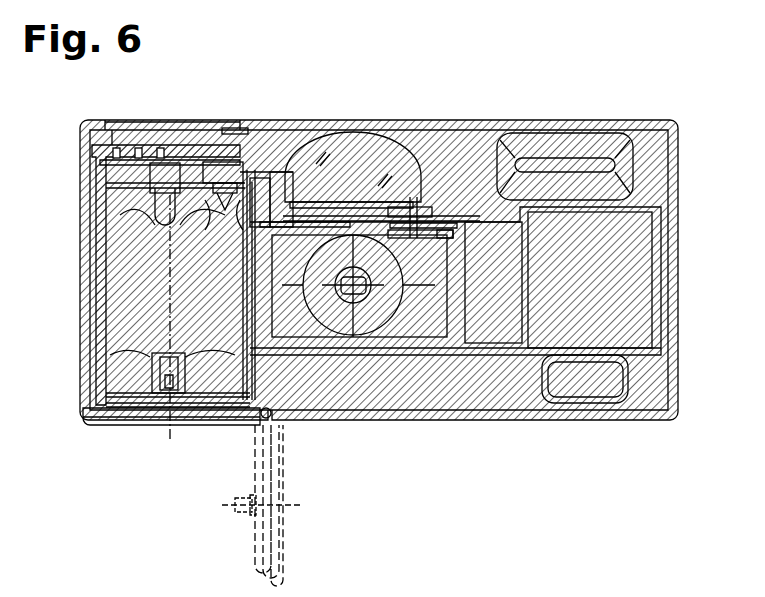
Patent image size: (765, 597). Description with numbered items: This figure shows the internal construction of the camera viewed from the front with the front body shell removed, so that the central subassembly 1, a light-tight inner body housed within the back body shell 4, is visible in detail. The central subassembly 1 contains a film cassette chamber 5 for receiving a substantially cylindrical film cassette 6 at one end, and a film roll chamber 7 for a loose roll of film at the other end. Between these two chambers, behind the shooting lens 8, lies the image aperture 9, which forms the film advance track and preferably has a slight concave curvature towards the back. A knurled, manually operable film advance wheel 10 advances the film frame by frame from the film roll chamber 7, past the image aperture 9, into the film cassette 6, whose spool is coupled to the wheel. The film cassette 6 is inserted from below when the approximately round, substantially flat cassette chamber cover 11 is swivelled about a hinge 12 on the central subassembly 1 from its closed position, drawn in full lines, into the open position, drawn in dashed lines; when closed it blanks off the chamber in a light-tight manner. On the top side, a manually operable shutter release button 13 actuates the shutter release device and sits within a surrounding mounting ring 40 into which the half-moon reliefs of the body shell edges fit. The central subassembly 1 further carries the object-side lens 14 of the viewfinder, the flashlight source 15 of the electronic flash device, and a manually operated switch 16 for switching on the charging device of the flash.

The central subassembly 1 is at (493, 330).
The back body shell 4 is at (678, 246).
The film cassette chamber 5 is at (106, 166).
The film cassette 6 is at (145, 306).
The film roll chamber 7 is at (637, 313).
The shooting lens 8 is at (356, 292).
The image aperture 9 is at (430, 322).
The film advance wheel 10 is at (113, 130).
The cassette chamber cover 11 is at (145, 427).
The hinge 12 is at (274, 406).
The shutter release button 13 is at (178, 126).
The object-side lens of viewfinder 14 is at (350, 158).
The flashlight source 15 is at (565, 160).
The manually operated switch 16 is at (596, 388).
The mounting ring 40 is at (228, 128).